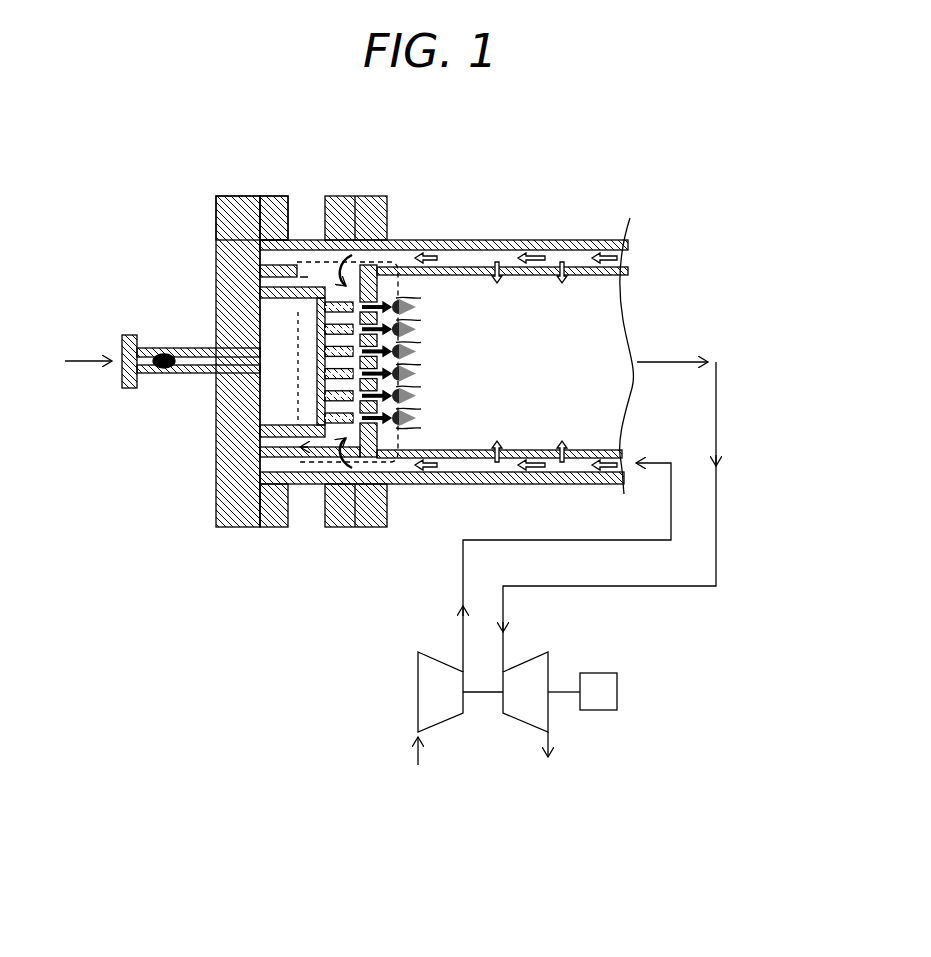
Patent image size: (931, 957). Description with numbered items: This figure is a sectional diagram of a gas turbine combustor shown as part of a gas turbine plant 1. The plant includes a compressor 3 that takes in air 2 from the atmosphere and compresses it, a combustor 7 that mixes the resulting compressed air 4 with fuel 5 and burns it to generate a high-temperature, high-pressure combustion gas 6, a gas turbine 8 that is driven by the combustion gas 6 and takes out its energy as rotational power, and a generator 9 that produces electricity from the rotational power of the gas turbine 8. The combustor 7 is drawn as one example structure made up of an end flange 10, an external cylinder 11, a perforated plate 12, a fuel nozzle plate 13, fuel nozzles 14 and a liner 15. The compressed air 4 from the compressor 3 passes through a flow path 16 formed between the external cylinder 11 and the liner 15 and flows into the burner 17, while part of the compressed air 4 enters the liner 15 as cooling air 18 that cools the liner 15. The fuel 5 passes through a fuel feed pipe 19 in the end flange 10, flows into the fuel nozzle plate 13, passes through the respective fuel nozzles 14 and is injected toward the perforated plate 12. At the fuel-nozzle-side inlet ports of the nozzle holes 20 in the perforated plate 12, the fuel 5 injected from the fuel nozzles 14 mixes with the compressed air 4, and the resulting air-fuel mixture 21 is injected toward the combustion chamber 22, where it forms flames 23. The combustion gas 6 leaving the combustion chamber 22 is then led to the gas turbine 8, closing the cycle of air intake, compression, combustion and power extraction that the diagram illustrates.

The gas turbine plant 1 is at (708, 181).
The air 2 is at (418, 745).
The compressor 3 is at (428, 676).
The compressed air 4 is at (535, 540).
The fuel 5 is at (85, 357).
The combustion gas 6 is at (673, 358).
The combustor 7 is at (470, 166).
The gas turbine 8 is at (530, 664).
The generator 9 is at (600, 680).
The end flange 10 is at (237, 197).
The external cylinder 11 is at (368, 197).
The perforated plate 12 is at (380, 288).
The fuel nozzle plate 13 is at (318, 302).
The fuel nozzles 14 is at (318, 338).
The liner 15 is at (577, 451).
The flow path 16 is at (553, 252).
The burner 17 is at (396, 262).
The cooling air 18 is at (566, 281).
The fuel feed pipe 19 is at (158, 349).
The nozzle holes 20 is at (403, 317).
The air-fuel mixture 21 is at (405, 342).
The combustion chamber 22 is at (505, 357).
The flames 23 is at (413, 375).